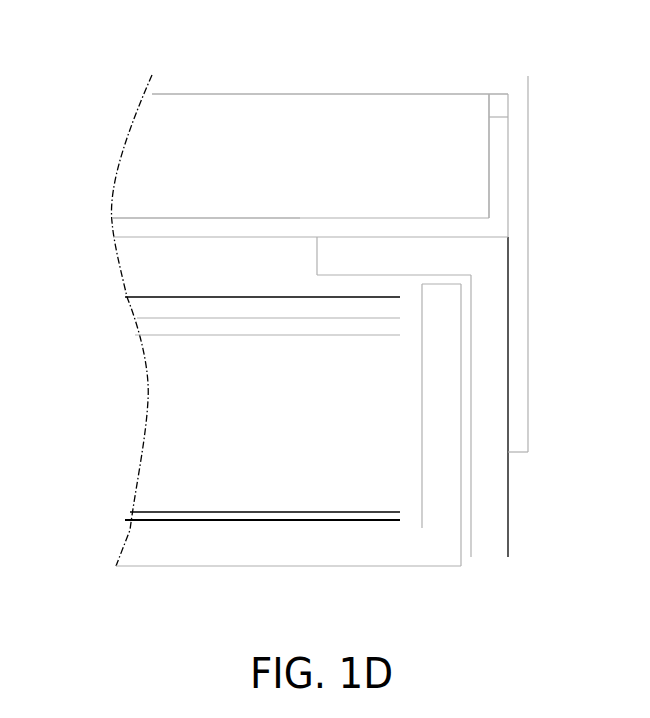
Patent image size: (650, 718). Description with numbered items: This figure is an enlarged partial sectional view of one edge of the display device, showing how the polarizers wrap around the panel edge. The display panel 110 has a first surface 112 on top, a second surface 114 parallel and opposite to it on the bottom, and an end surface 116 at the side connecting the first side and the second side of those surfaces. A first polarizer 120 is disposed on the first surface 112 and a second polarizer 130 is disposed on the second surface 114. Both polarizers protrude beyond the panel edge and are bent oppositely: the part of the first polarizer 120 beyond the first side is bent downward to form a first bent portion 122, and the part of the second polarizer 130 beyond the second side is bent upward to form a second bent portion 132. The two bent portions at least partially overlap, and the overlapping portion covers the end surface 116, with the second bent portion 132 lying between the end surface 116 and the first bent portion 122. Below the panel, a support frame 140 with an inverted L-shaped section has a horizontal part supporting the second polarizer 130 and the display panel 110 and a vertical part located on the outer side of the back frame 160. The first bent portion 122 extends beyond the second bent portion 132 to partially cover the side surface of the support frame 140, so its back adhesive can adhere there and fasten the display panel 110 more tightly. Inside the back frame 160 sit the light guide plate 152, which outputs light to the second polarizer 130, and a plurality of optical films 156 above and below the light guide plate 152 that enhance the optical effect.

The display panel 110 is at (232, 125).
The first surface 112 is at (180, 94).
The second surface 114 is at (143, 218).
The end surface 116 is at (491, 117).
The first polarizer 120 is at (367, 94).
The first bent portion 122 is at (522, 204).
The second polarizer 130 is at (293, 228).
The second bent portion 132 is at (498, 153).
The support frame 140 is at (488, 498).
The light guide plate 152 is at (253, 465).
The optical films 156 is at (138, 297).
The back frame 160 is at (425, 567).